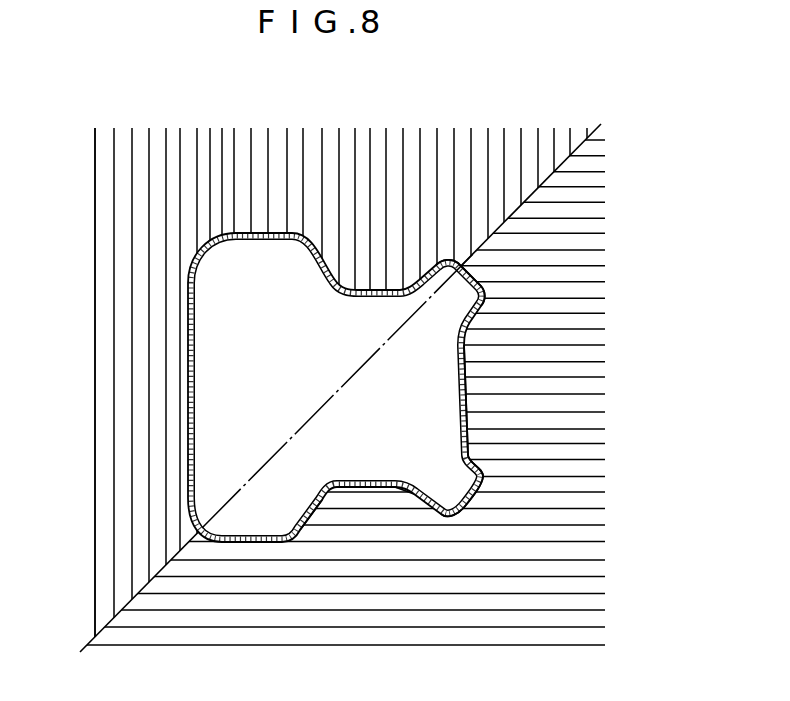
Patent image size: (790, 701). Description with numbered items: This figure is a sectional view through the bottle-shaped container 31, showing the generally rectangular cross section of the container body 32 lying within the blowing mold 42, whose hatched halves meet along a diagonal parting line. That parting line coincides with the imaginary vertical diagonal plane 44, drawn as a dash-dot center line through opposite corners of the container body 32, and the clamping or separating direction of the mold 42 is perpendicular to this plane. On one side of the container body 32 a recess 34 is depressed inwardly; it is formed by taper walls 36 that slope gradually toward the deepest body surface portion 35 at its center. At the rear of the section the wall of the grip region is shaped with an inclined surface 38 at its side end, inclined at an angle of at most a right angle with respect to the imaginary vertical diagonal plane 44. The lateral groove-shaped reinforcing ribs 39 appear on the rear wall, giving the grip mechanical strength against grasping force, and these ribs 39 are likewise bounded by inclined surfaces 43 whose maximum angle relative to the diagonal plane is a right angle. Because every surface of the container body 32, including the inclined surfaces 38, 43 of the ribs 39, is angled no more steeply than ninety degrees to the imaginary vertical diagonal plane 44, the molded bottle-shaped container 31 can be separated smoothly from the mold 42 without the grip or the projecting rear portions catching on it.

The bottle-shaped container 31 is at (184, 326).
The container body 32 is at (246, 231).
The recesses 34 is at (400, 498).
The deepest body surface portion 35 is at (383, 485).
The taper walls 36 is at (321, 518).
The inclined surface 38 is at (477, 281).
The reinforcing ribs 39 is at (470, 407).
The mold 42 is at (130, 465).
The inclined surfaces 43 is at (480, 454).
The imaginary vertical diagonal plane 44 is at (307, 424).